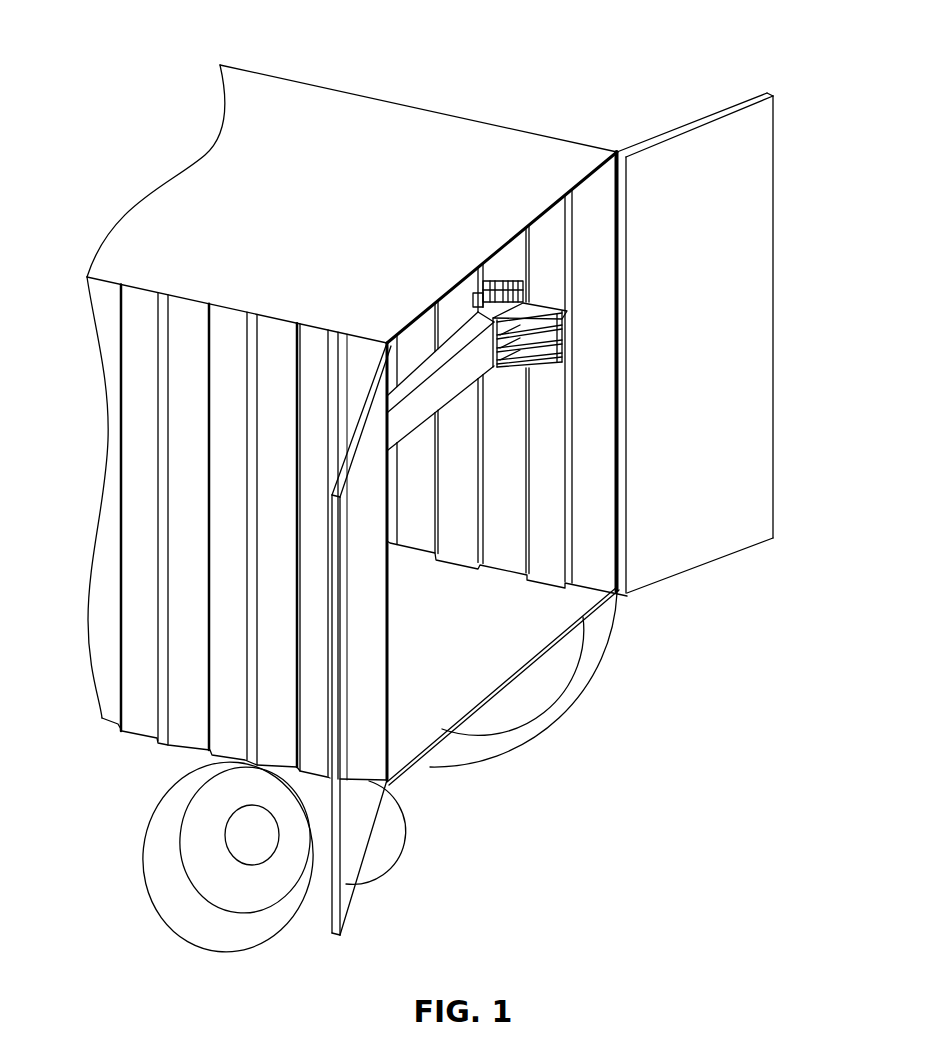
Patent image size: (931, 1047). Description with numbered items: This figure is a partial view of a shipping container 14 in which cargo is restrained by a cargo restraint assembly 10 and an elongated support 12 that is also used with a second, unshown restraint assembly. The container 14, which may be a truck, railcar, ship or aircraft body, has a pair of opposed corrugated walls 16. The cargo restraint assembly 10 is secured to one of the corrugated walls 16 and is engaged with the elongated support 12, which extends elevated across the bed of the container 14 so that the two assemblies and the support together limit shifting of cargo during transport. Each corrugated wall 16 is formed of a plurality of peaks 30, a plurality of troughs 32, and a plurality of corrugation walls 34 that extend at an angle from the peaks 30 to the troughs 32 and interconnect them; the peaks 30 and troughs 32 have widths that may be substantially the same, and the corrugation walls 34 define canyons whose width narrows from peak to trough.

The cargo restraint assembly 10 is at (518, 370).
The elongated support 12 is at (432, 445).
The shipping container 14 is at (495, 118).
The corrugated wall 16 is at (600, 215).
The peak 30 is at (560, 263).
The trough 32 is at (595, 575).
The corrugation wall 34 is at (572, 422).